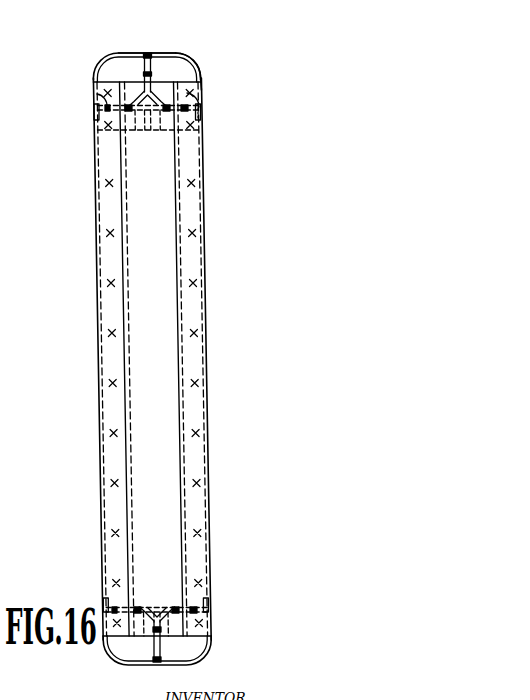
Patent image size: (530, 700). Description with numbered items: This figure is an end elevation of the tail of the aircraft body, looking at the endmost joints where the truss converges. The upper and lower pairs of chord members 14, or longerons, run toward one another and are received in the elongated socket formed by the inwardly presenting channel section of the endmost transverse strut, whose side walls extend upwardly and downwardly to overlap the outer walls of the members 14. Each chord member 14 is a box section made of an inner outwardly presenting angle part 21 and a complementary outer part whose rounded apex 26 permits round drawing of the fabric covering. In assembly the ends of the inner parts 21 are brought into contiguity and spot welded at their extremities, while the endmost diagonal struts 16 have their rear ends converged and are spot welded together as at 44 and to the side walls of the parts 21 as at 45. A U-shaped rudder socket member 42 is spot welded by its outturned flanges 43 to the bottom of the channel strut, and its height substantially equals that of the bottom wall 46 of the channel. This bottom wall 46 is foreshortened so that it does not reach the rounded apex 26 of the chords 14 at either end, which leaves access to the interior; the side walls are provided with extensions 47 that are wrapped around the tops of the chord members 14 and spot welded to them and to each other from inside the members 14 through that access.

The chord member 14 is at (117, 63).
The diagonal strut 16 is at (140, 135).
The inner outwardly presenting angle cross-section part 21 is at (104, 127).
The apex of outer part 26 is at (190, 61).
The rudder socket member 42 is at (117, 367).
The outturned flanges 43 is at (151, 78).
The spot weld 44 is at (150, 135).
The spot weld 45 is at (93, 100).
The bottom wall 46 is at (198, 295).
The side wall extensions 47 is at (130, 53).